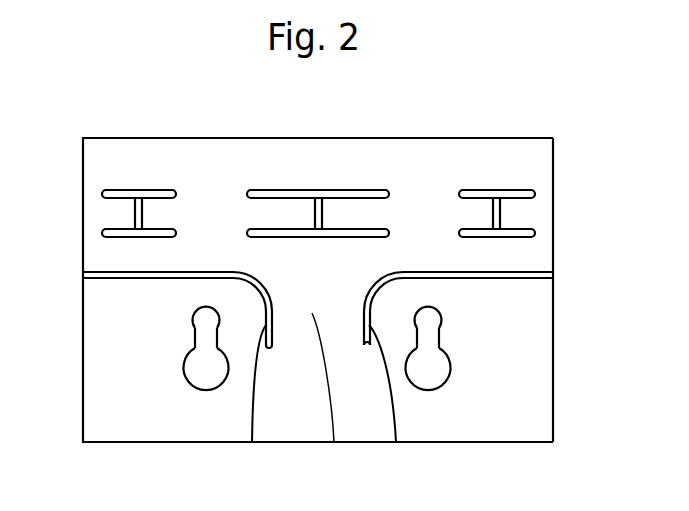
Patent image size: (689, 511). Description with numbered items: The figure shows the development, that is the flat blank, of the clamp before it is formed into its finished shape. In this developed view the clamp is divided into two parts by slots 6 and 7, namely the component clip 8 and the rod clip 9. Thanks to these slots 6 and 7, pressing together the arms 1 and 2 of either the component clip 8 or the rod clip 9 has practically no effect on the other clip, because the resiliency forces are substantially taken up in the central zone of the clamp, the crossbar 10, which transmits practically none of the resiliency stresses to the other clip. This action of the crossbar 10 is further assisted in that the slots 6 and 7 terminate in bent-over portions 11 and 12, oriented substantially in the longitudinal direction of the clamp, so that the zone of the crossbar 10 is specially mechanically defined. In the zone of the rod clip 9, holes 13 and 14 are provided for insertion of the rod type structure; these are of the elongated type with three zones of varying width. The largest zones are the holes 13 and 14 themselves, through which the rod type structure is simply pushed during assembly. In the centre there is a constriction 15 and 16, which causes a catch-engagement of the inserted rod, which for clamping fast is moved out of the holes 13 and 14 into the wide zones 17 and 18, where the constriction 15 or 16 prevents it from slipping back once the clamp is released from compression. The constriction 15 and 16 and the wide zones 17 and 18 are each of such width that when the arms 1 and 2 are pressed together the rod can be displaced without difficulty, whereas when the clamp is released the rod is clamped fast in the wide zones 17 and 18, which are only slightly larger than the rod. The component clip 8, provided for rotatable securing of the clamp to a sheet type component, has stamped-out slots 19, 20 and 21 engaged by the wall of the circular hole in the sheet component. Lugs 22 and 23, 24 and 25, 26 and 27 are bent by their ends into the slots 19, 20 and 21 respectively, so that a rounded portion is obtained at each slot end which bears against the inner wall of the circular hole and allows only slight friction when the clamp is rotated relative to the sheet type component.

The arm 1 is at (215, 192).
The arm 2 is at (432, 187).
The slot 6 is at (145, 278).
The slot 7 is at (495, 278).
The component clip 8 is at (282, 137).
The rod clip 9 is at (277, 442).
The crossbar 10 is at (334, 442).
The bent-over portion 11 is at (252, 442).
The bent-over portion 12 is at (396, 442).
The hole 13 is at (185, 372).
The hole 14 is at (452, 370).
The constriction 15 is at (195, 335).
The constriction 16 is at (440, 335).
The wide zone 17 is at (195, 313).
The wide zone 18 is at (437, 308).
The slot 19 is at (138, 190).
The slot 20 is at (318, 190).
The slot 21 is at (500, 190).
The lug 22 is at (125, 213).
The lug 23 is at (153, 210).
The lug 24 is at (297, 213).
The lug 25 is at (342, 212).
The lug 26 is at (482, 210).
The lug 27 is at (512, 213).